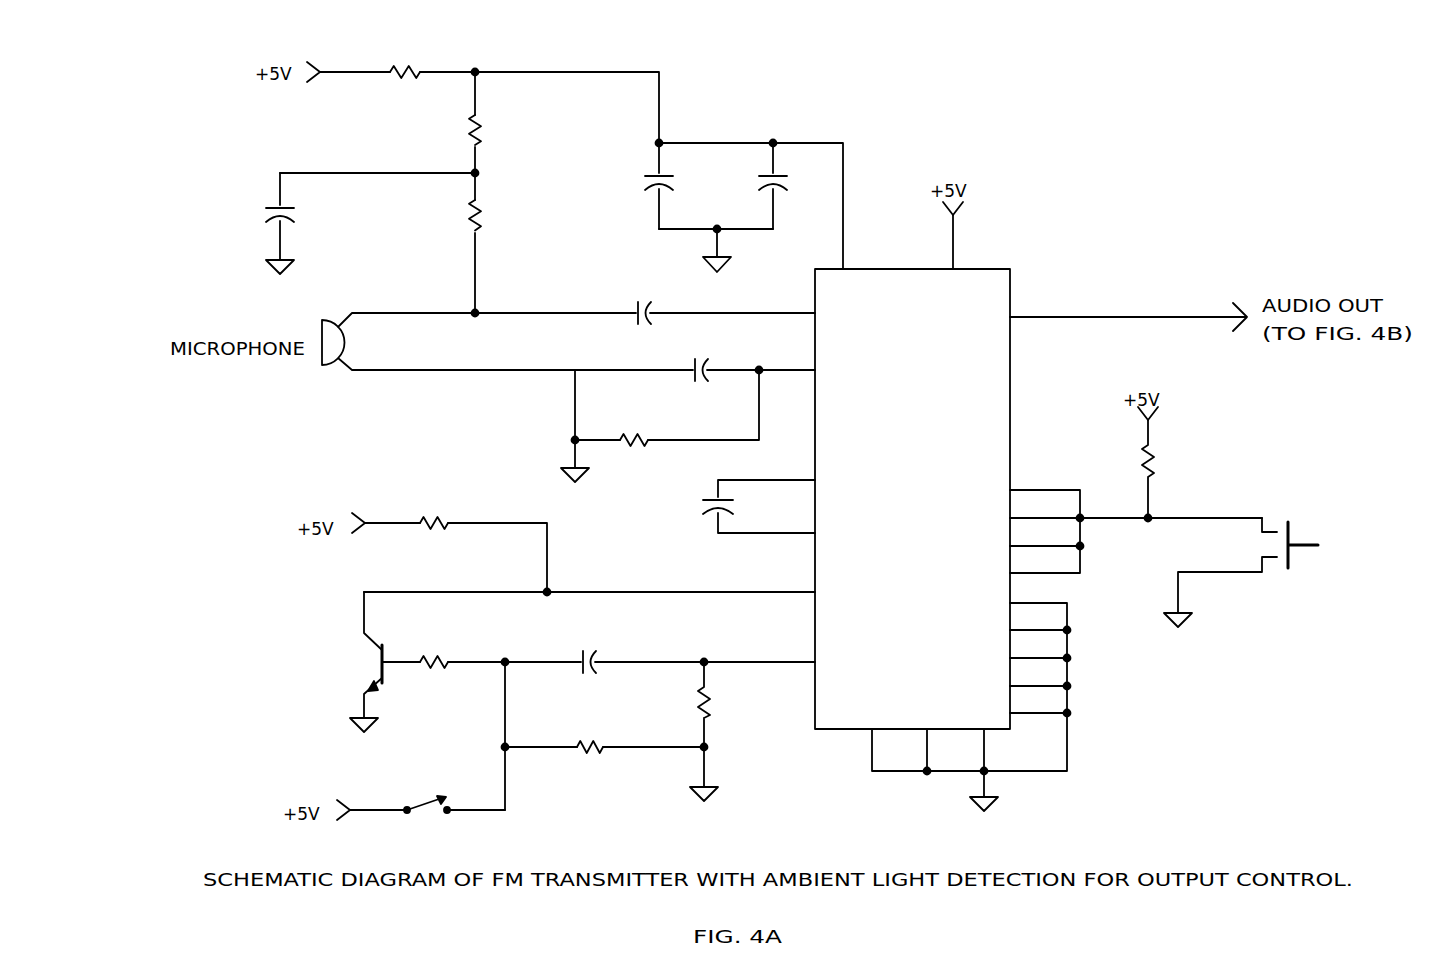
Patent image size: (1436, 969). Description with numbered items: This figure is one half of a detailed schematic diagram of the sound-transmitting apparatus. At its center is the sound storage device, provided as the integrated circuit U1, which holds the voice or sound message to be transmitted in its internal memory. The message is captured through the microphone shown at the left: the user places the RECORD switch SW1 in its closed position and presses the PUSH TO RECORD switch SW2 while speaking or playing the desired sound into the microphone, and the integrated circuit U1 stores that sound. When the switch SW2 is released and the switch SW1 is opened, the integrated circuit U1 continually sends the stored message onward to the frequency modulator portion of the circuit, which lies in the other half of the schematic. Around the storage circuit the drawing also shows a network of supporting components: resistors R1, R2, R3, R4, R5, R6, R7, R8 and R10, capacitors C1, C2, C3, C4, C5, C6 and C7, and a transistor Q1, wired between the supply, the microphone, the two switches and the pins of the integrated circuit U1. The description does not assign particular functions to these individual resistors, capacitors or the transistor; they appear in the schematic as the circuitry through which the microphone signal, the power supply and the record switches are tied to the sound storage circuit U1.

The resistor 33 ohm R1 is at (404, 74).
The resistor 2K R2 is at (498, 133).
The resistor 10K R3 is at (503, 216).
The resistor 300K R4 is at (635, 441).
The resistor 47K R5 is at (432, 528).
The resistor 47K R6 is at (432, 666).
The resistor 47K R7 is at (589, 748).
The resistor 220K R8 is at (732, 731).
The resistor 47K R10 is at (1176, 469).
The capacitor 10uF 10V C1 is at (265, 223).
The capacitor 10uF 10V C2 is at (646, 186).
The capacitor 0.1uF C3 is at (790, 186).
The capacitor 0.027uF C4 is at (634, 318).
The capacitor 10uF 10V C5 is at (707, 383).
The capacitor 0.1uF C6 is at (698, 514).
The capacitor 0.1uF C7 is at (591, 668).
The integrated circuit U1 is at (906, 505).
The PN2222A transistor Q1 is at (311, 662).
The switch SW1 is at (427, 808).
The PUSH TO RECORD switch SW2 is at (1296, 572).